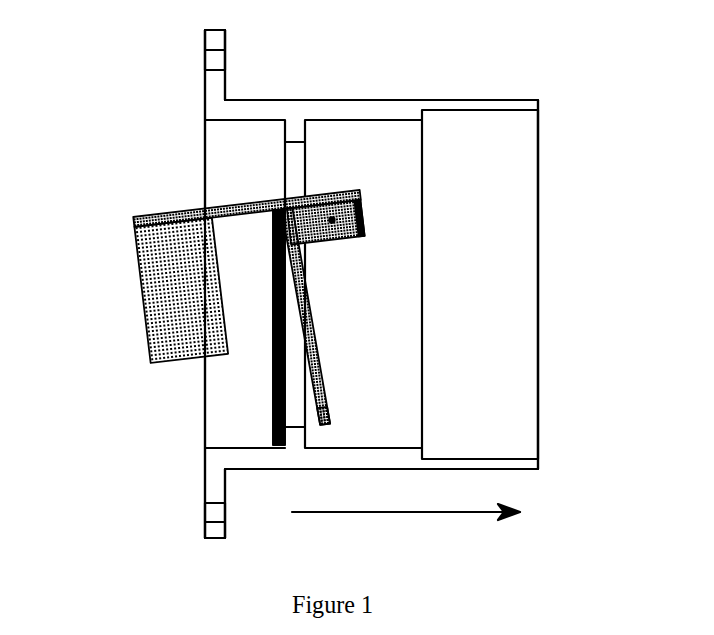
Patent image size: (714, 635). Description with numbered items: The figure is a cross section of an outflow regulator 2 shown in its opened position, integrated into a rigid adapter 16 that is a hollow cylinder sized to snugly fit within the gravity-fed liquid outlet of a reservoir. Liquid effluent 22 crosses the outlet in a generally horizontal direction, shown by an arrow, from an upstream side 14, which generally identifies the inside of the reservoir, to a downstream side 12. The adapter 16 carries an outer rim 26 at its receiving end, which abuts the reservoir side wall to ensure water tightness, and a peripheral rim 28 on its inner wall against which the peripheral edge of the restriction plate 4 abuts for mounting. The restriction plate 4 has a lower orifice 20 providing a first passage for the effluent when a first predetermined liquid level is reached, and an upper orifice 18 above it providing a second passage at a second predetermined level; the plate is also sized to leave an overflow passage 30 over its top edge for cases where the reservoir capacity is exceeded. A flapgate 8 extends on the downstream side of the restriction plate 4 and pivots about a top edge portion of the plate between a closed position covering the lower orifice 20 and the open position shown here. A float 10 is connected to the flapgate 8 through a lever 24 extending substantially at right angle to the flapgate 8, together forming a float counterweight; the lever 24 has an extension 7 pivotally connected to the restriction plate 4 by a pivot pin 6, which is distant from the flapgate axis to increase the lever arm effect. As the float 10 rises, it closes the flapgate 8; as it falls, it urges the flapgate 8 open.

The outflow regulator 2 is at (160, 116).
The restriction plate 4 is at (260, 366).
The pivot pin 6 is at (358, 213).
The extension 7 is at (334, 219).
The flapgate 8 is at (329, 399).
The float 10 is at (150, 241).
The downstream side 12 is at (525, 335).
The upstream side 14 is at (87, 137).
The adapter 16 is at (397, 111).
The upper orifice 18 is at (273, 308).
The lower orifice 20 is at (277, 410).
The liquid effluent 22 is at (428, 513).
The lever 24 is at (163, 217).
The outer rim 26 is at (215, 84).
The peripheral rim 28 is at (298, 136).
The overflow passage 30 is at (297, 177).